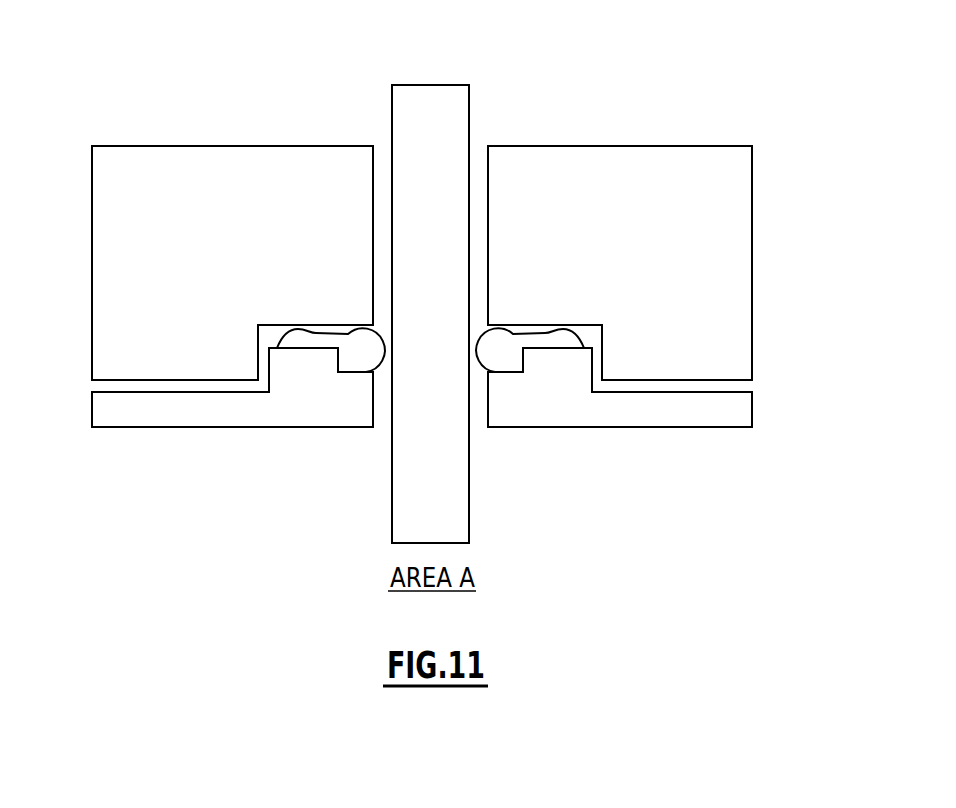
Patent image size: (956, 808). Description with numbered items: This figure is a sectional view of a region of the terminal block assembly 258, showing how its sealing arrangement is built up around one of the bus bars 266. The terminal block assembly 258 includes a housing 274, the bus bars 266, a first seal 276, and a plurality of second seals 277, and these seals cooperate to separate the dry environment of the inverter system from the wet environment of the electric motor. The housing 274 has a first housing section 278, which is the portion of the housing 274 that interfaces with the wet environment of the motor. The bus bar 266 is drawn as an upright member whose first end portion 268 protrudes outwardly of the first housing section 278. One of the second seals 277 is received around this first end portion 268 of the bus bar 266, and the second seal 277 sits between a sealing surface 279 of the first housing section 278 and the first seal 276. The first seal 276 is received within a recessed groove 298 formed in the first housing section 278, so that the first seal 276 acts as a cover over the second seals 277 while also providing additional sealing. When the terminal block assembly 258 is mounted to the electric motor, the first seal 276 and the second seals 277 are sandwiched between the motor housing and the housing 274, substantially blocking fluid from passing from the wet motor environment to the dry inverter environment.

The terminal block assembly 258 is at (655, 245).
The bus bar 266 is at (439, 115).
The first end portion 268 is at (441, 352).
The housing 274 is at (732, 225).
The first seal 276 is at (720, 405).
The second seal 277 is at (578, 337).
The first housing section 278 is at (200, 205).
The sealing surface 279 is at (268, 331).
The recessed groove 298 is at (598, 364).